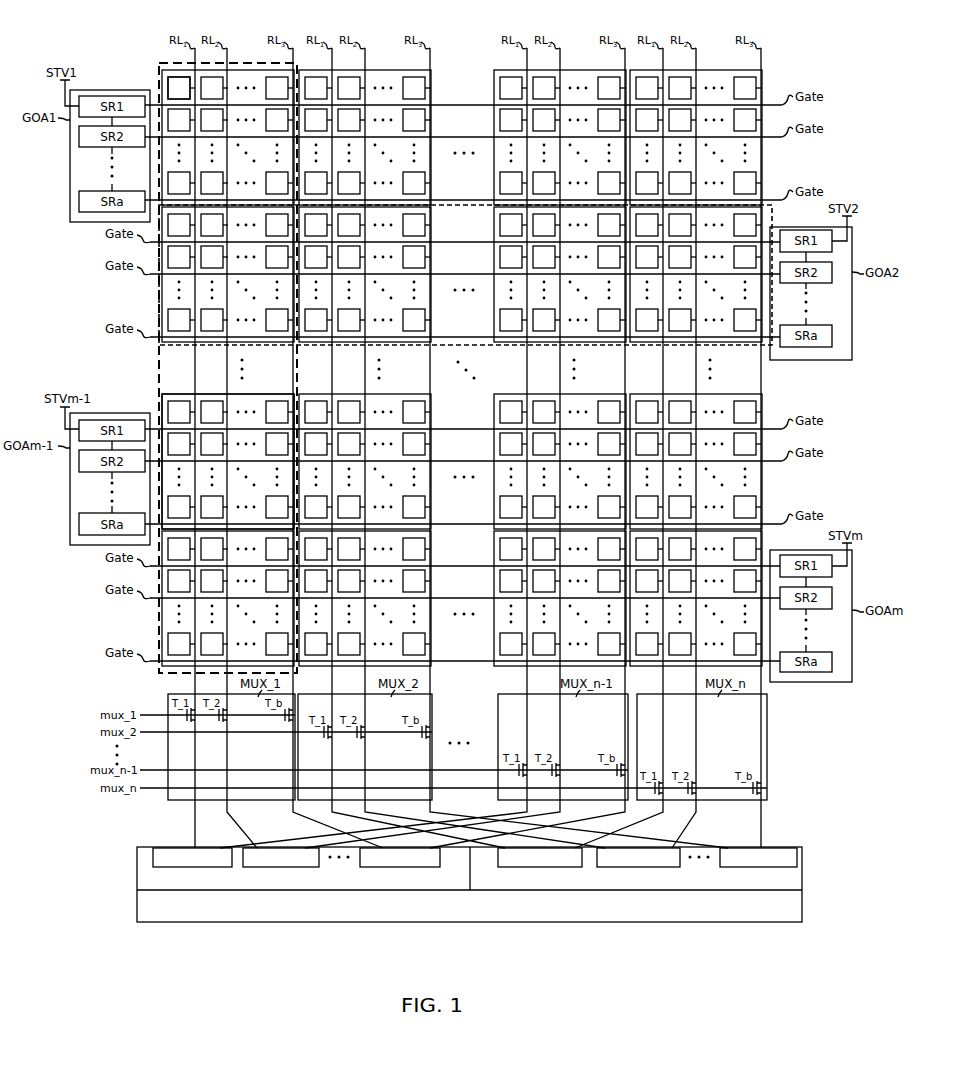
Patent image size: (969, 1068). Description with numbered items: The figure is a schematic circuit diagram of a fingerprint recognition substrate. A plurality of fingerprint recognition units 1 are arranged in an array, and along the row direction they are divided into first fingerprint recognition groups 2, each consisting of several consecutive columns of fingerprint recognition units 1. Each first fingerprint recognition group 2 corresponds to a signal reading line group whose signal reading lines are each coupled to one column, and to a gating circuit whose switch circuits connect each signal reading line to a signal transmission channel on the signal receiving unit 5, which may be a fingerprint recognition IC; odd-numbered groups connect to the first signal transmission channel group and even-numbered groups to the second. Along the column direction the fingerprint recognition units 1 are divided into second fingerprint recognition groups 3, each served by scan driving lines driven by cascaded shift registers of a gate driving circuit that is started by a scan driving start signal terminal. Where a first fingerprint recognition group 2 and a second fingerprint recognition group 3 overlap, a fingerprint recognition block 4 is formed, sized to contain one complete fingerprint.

The fingerprint recognition unit 1 is at (172, 88).
The first fingerprint recognition group 2 is at (252, 63).
The second fingerprint recognition group 3 is at (158, 297).
The fingerprint recognition block 4 is at (172, 395).
The signal receiving unit 5 is at (137, 877).